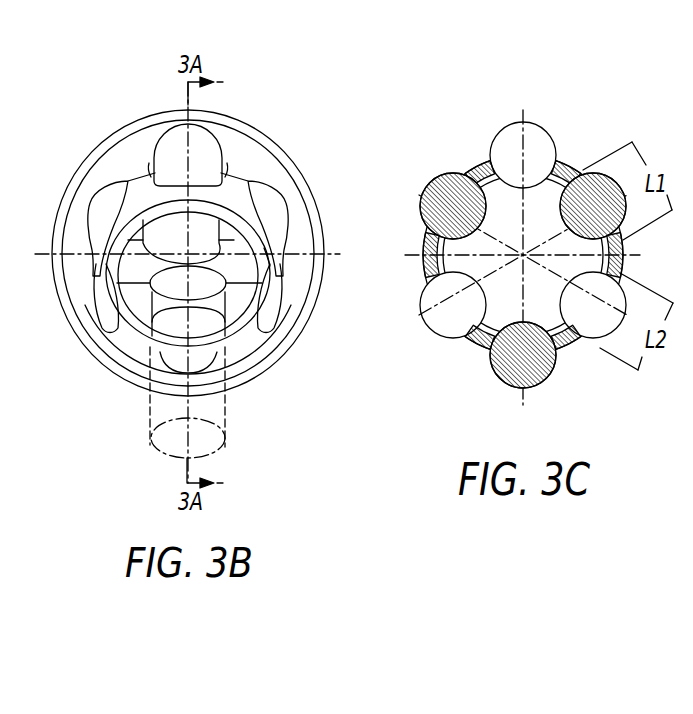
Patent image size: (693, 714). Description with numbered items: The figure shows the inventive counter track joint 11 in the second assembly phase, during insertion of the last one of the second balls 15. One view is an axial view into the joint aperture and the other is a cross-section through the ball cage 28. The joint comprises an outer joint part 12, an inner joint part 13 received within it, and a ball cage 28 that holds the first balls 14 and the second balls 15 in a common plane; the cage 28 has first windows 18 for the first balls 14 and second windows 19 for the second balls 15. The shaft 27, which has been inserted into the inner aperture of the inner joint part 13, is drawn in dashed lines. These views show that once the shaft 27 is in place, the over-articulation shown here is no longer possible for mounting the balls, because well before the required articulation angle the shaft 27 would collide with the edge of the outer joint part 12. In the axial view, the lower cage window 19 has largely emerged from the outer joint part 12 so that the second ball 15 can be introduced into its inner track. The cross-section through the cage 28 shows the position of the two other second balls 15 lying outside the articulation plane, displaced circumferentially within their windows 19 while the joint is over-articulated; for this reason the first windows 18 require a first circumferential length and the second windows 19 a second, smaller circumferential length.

In FIG. 3B, the counter track joint 11 is at (296, 112).
In FIG. 3B, the outer joint part 12 is at (272, 167).
In FIG. 3B, the inner joint part 13 is at (237, 275).
In FIG. 3C, the inner joint part 13 is at (523, 255).
In FIG. 3B, the first balls 14 is at (188, 340).
In FIG. 3C, the first balls 14 is at (512, 378).
In FIG. 3B, the second balls 15 is at (177, 155).
In FIG. 3C, the second balls 15 is at (535, 140).
In FIG. 3C, the first cage windows 18 is at (488, 353).
In FIG. 3C, the second cage windows 19 is at (565, 160).
In FIG. 3B, the shaft 27 is at (150, 422).
In FIG. 3B, the ball cage 28 is at (277, 250).
In FIG. 3C, the ball cage 28 is at (582, 168).